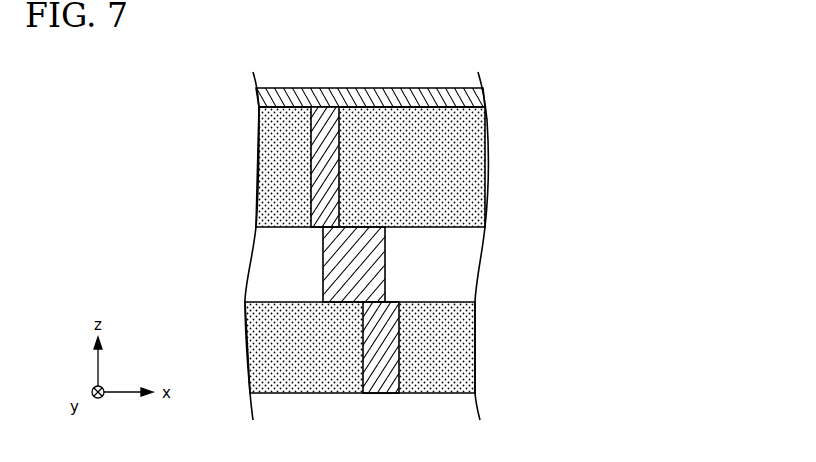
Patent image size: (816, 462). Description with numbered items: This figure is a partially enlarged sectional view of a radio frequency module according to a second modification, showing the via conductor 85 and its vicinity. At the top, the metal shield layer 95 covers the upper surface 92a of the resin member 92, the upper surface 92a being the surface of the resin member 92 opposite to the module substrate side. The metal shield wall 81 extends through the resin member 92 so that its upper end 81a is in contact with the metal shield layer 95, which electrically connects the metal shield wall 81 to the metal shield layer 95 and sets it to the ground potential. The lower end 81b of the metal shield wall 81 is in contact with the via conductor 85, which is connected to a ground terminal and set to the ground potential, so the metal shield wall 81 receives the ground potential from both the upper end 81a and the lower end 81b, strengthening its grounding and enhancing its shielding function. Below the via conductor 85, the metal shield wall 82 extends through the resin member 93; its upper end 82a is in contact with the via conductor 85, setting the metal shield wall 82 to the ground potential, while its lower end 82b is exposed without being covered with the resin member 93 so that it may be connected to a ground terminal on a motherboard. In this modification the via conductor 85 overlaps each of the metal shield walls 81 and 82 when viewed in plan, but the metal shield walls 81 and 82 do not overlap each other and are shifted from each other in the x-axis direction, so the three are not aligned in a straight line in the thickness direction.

The metal shield wall 81 is at (299, 141).
The upper end of metal shield wall 81a is at (323, 107).
The lower end of metal shield wall 81b is at (340, 242).
The metal shield wall 82 is at (442, 355).
The upper end of metal shield wall 82a is at (382, 289).
The lower end of metal shield wall 82b is at (379, 394).
The via conductor 85 is at (338, 255).
The resin member 92 is at (462, 160).
The upper surface of resin member 92a is at (388, 107).
The resin member 93 is at (260, 365).
The metal shield layer 95 is at (428, 90).